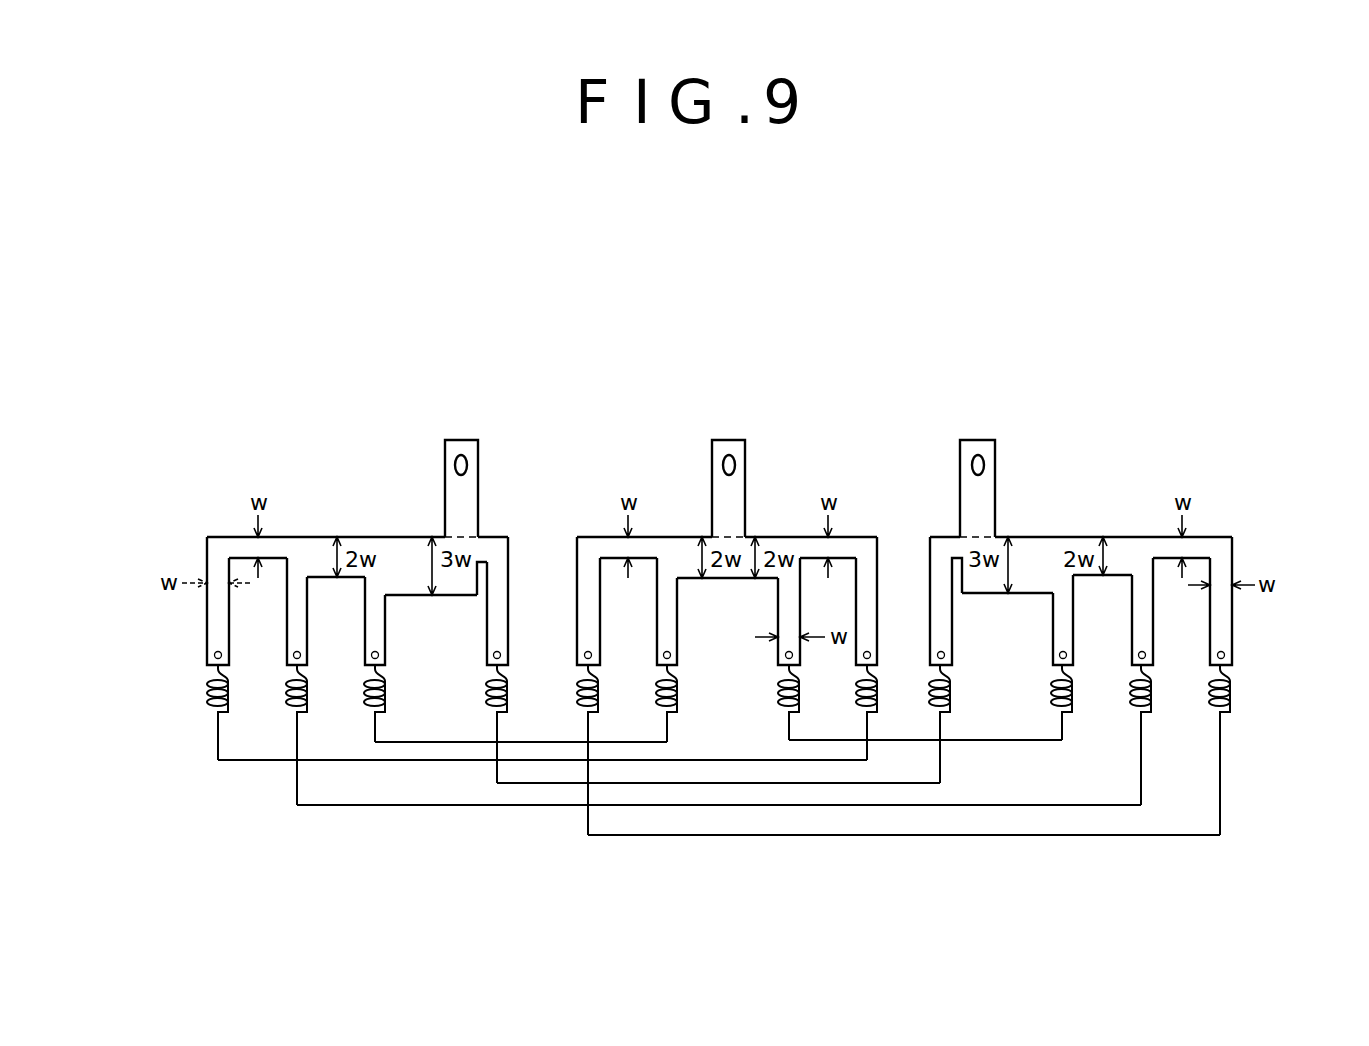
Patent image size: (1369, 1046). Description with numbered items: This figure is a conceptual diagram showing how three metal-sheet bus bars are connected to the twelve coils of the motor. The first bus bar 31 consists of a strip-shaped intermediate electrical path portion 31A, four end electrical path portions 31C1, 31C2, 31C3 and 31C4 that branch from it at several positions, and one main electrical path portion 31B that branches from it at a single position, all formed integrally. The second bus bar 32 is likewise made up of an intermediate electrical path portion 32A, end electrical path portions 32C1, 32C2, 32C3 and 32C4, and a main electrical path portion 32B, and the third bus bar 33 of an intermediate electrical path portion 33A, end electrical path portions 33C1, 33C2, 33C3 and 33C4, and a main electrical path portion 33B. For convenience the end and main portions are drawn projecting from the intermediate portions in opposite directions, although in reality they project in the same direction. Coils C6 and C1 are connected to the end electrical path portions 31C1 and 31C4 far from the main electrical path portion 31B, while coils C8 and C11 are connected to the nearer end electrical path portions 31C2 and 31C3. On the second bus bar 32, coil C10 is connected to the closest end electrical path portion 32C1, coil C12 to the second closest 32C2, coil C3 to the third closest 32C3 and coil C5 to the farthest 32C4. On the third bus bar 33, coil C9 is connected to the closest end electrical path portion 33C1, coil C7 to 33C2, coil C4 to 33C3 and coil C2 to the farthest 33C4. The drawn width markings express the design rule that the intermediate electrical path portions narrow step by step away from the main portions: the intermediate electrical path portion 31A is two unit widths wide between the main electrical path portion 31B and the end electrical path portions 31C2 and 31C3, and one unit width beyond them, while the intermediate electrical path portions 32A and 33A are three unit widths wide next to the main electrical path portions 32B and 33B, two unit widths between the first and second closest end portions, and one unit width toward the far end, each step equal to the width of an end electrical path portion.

The first bus bar 31 is at (757, 460).
The intermediate electrical path portion 31A is at (800, 546).
The main electrical path portion 31B is at (729, 456).
The end electrical path portion 31C1 is at (584, 615).
The end electrical path portion 31C2 is at (713, 618).
The end electrical path portion 31C3 is at (778, 625).
The end electrical path portion 31C4 is at (880, 612).
The second bus bar 32 is at (1006, 461).
The intermediate electrical path portion 32A is at (1050, 546).
The main electrical path portion 32B is at (975, 456).
The end electrical path portion 32C1 is at (997, 614).
The end electrical path portion 32C2 is at (1065, 605).
The end electrical path portion 32C3 is at (1143, 637).
The end electrical path portion 32C4 is at (1225, 645).
The third bus bar 33 is at (488, 461).
The intermediate electrical path portion 33A is at (400, 545).
The main electrical path portion 33B is at (461, 456).
The end electrical path portion 33C1 is at (497, 618).
The end electrical path portion 33C2 is at (373, 607).
The end electrical path portion 33C3 is at (293, 637).
The end electrical path portion 33C4 is at (210, 645).
The coil C1 is at (857, 684).
The coil C2 is at (208, 684).
The coil C3 is at (1131, 684).
The coil C4 is at (287, 684).
The coil C5 is at (1210, 684).
The coil C6 is at (578, 684).
The coil C7 is at (365, 684).
The coil C8 is at (657, 684).
The coil C9 is at (487, 684).
The coil C10 is at (930, 684).
The coil C11 is at (779, 684).
The coil C12 is at (1052, 684).